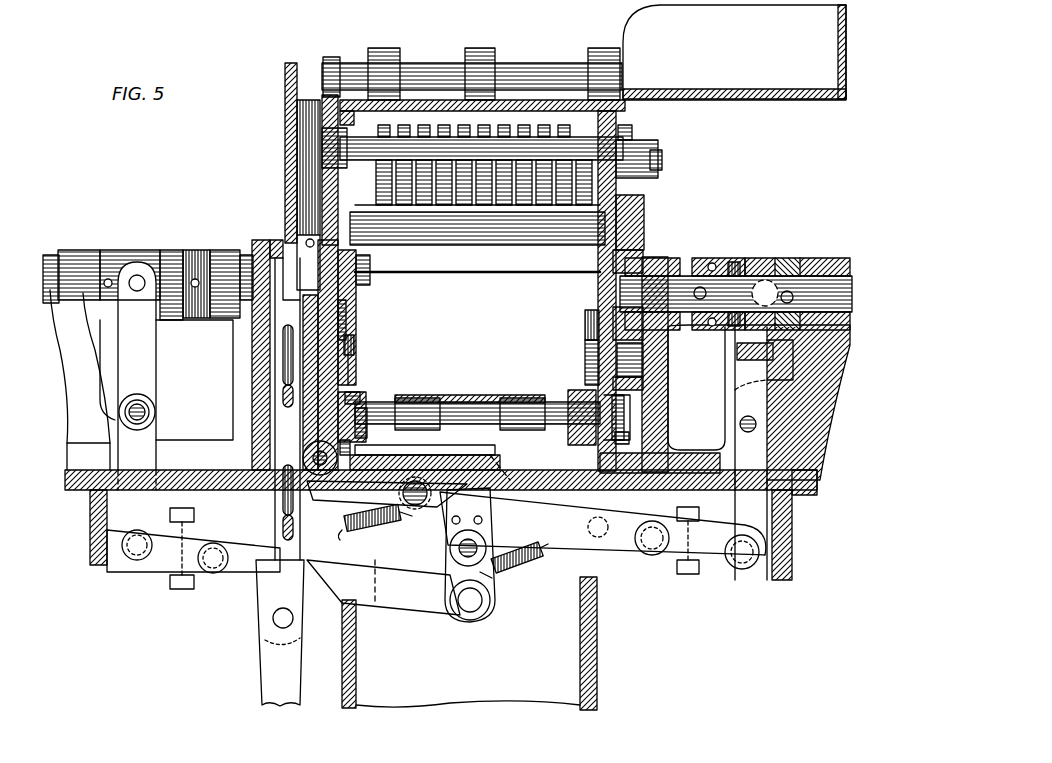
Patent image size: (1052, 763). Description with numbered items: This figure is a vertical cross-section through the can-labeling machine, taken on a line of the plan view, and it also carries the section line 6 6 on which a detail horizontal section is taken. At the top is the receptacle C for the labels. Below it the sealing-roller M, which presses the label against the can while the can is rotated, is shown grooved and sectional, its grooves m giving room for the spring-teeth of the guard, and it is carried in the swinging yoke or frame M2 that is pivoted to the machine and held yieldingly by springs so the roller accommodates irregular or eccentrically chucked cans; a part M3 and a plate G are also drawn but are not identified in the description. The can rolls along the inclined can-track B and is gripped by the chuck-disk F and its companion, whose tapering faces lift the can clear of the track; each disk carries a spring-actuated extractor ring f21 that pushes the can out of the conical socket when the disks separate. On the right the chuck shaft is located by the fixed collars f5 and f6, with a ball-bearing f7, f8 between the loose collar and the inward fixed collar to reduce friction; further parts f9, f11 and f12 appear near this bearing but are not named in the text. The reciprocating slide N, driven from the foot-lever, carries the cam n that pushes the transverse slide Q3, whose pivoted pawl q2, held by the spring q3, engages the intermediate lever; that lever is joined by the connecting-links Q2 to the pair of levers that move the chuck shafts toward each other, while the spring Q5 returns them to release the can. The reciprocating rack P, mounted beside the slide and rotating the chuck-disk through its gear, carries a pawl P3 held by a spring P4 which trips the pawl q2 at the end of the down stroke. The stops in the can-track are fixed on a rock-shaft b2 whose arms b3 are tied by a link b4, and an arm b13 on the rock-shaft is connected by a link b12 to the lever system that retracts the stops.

The receptacle for the labels C is at (742, 76).
The plate G is at (520, 100).
The sealing-roller M is at (425, 165).
The grooves of the sealing-roller m is at (419, 128).
The swinging yoke or frame M2 is at (645, 170).
The gear M3 is at (634, 130).
The reciprocating rack P is at (285, 137).
The spring P4 is at (298, 178).
The pawl on the rack P3 is at (338, 275).
The chuck or disk F is at (352, 310).
The fixed collar f5 is at (793, 258).
The inward fixed collar f6 is at (712, 262).
The ball-bearing f7 is at (735, 262).
The ball-bearing f8 is at (742, 262).
The bearing f9 is at (644, 210).
The spring f11 is at (352, 340).
The bracket f12 is at (725, 330).
The spring-actuated extractor plate or ring f21 is at (598, 340).
The can-track B is at (368, 398).
The rock-shaft b2 is at (468, 408).
The arm b3 is at (620, 430).
The link b4 is at (632, 438).
The link b12 is at (352, 447).
The arm b13 is at (350, 425).
The connecting-link Q2 is at (436, 553).
The transverse slide Q3 is at (412, 468).
The spring Q5 is at (520, 570).
The pivoted pawl q2 is at (404, 494).
The spring q3 is at (390, 528).
The reciprocating slide N is at (289, 409).
The cam n is at (283, 374).
The section line 6 6 is at (60, 468).